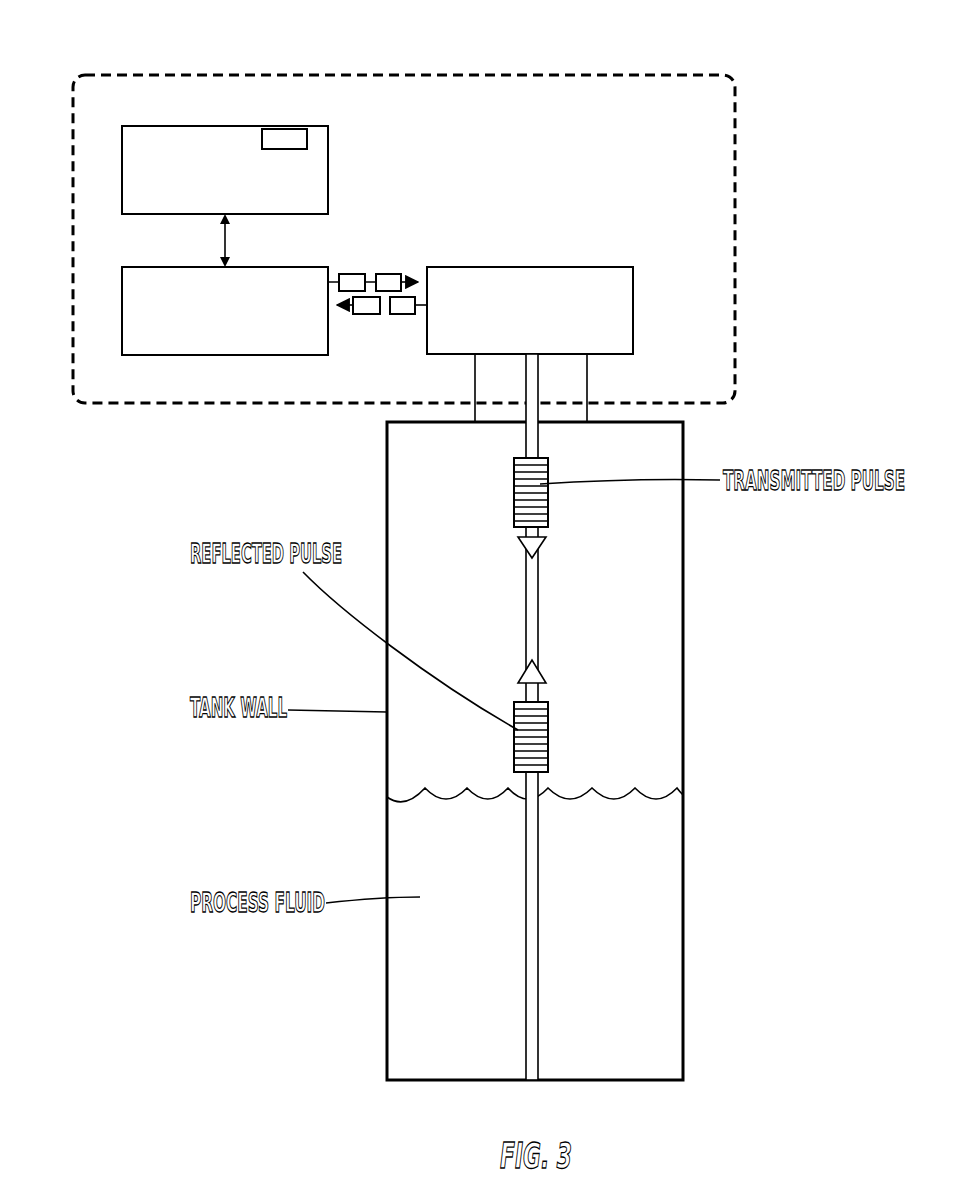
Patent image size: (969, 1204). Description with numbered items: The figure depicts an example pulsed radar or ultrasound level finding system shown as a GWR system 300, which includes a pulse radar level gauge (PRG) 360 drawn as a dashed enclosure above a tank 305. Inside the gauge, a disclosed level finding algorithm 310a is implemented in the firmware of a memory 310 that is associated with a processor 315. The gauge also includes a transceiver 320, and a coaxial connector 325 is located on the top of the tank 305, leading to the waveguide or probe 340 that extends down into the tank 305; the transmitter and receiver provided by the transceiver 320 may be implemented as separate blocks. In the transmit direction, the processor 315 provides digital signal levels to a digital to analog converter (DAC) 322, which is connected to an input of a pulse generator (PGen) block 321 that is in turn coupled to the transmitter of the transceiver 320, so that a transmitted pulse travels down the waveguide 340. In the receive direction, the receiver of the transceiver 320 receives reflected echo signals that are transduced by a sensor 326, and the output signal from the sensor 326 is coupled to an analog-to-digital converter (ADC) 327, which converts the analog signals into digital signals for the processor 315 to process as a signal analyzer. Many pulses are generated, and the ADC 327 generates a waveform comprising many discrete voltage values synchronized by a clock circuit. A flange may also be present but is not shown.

The GWR system 300 is at (796, 222).
The tank 305 is at (683, 541).
The memory 310 is at (183, 126).
The level finding algorithm 310a is at (307, 147).
The processor 315 is at (183, 267).
The transceiver 320 is at (633, 312).
The pulse generator block 321 is at (392, 273).
The digital to analog converter 322 is at (355, 273).
The coaxial connector 325 is at (587, 380).
The sensor 326 is at (402, 315).
The analog-to-digital converter 327 is at (362, 315).
The waveguide 340 is at (532, 623).
The pulse radar level gauge 360 is at (746, 125).